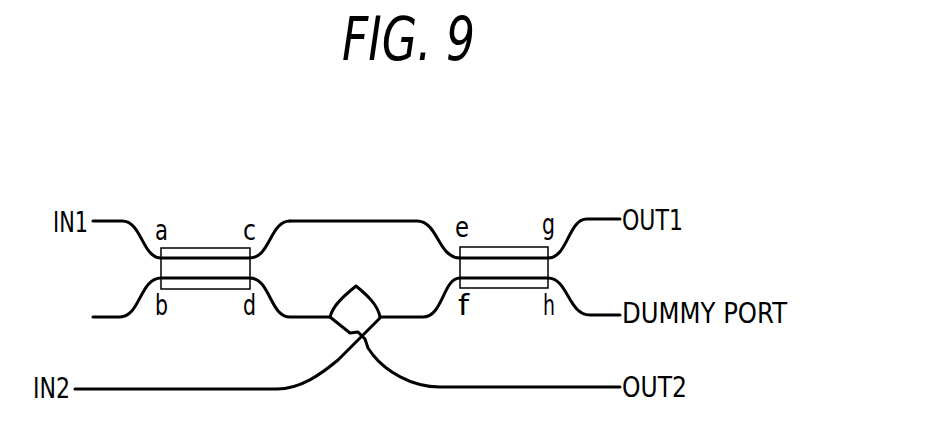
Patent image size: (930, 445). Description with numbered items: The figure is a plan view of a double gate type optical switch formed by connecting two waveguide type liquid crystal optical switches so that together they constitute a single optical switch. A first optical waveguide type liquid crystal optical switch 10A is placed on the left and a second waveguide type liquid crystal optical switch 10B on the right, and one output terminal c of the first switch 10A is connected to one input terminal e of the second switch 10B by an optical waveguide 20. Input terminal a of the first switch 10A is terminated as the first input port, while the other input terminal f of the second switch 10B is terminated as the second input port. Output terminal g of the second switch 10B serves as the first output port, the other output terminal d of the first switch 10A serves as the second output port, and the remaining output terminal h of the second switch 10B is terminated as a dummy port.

The first optical waveguide type liquid crystal optical switch 10A is at (196, 268).
The second waveguide type liquid crystal optical switch 10B is at (497, 263).
The optical waveguide 20 is at (343, 221).